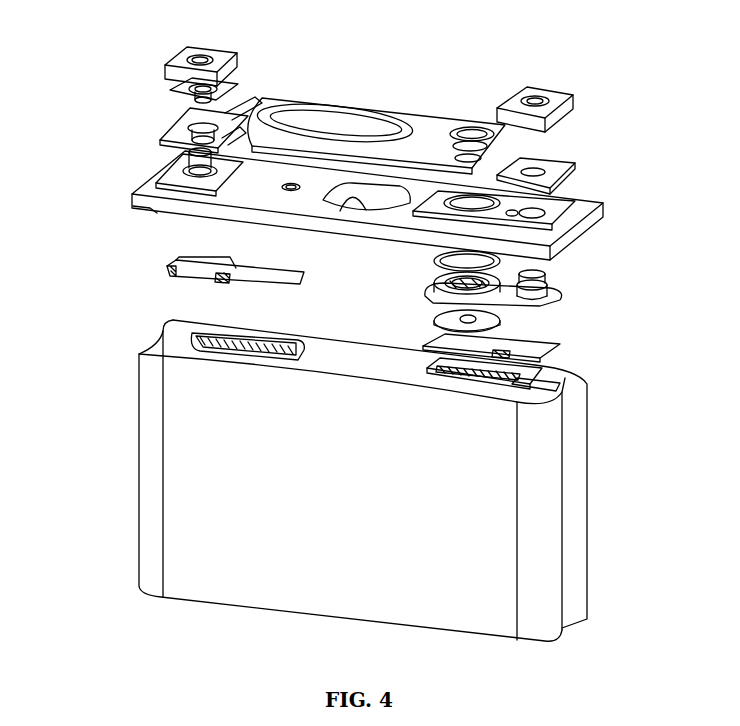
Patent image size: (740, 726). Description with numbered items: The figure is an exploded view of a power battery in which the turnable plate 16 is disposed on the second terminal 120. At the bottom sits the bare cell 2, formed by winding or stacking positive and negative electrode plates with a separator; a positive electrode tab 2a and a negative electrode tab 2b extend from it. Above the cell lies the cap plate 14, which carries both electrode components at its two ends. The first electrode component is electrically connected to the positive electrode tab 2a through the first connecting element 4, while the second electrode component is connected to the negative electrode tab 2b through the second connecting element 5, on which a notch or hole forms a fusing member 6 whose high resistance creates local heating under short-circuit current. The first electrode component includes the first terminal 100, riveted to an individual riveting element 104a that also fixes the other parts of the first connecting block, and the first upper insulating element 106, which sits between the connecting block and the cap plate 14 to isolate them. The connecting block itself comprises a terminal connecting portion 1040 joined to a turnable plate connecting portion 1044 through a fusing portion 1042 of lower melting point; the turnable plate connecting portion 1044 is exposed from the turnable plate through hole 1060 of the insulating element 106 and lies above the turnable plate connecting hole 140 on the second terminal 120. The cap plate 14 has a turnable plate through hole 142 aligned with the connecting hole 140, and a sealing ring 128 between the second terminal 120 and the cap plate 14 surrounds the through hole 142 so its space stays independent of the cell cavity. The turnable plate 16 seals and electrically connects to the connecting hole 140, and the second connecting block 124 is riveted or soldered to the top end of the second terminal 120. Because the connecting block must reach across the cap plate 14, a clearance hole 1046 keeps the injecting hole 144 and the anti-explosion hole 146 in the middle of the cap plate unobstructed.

The bare cell 2 is at (253, 473).
The positive electrode tab 2a is at (163, 333).
The negative electrode tab 2b is at (520, 387).
The first connecting element 4 is at (167, 262).
The second connecting element 5 is at (560, 338).
The fusing member 6 is at (532, 382).
The cap plate 14 is at (350, 177).
The turnable plate 16 is at (507, 323).
The first terminal 100 is at (157, 156).
The riveting element 104a is at (175, 47).
The first upper insulating element 106 is at (170, 128).
The second terminal 120 is at (547, 287).
The second connecting block 124 is at (548, 89).
The sealing ring 128 is at (440, 262).
The turnable plate connecting hole 140 is at (440, 293).
The turnable plate through hole 142 is at (553, 155).
The injecting hole 144 is at (281, 180).
The anti-explosion hole 146 is at (350, 197).
The terminal connecting portion 1040 is at (170, 99).
The fusing portion 1042 is at (403, 107).
The turnable plate connecting portion 1044 is at (487, 127).
The clearance hole 1046 is at (357, 123).
The turnable plate through hole 1060 is at (477, 207).